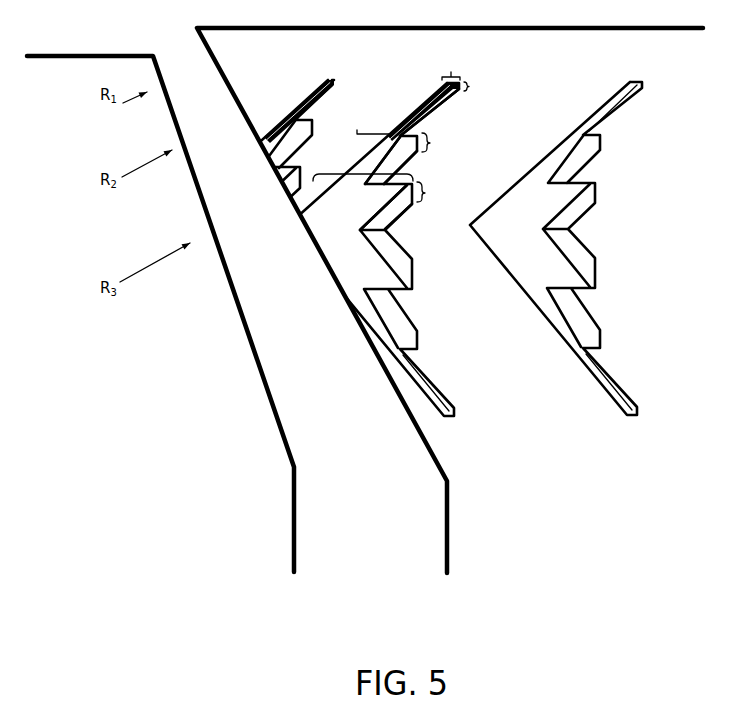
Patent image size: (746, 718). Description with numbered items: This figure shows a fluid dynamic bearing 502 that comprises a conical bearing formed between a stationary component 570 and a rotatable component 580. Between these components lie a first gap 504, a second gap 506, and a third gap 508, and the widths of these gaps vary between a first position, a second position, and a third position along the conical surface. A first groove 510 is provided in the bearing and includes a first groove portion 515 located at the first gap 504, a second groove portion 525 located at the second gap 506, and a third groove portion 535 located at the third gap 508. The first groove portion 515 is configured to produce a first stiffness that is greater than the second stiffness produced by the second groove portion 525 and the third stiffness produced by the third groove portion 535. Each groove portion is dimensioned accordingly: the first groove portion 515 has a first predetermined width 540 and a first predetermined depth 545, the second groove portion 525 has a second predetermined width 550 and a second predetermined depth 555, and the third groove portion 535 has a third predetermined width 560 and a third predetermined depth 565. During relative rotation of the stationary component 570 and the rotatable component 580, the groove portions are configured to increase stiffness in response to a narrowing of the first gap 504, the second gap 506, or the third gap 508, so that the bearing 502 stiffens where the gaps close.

The fluid dynamic bearing 502 is at (403, 535).
The first gap 504 is at (173, 107).
The second gap 506 is at (274, 168).
The third gap 508 is at (310, 232).
The first groove 510 is at (375, 248).
The first groove portion 515 is at (420, 106).
The second groove portion 525 is at (408, 160).
The third groove portion 535 is at (400, 224).
The first predetermined width 540 is at (451, 72).
The first predetermined depth 545 is at (472, 85).
The second predetermined width 550 is at (390, 128).
The second predetermined depth 555 is at (431, 142).
The third predetermined width 560 is at (366, 173).
The third predetermined depth 565 is at (446, 185).
The stationary component 570 is at (536, 472).
The rotatable component 580 is at (187, 472).